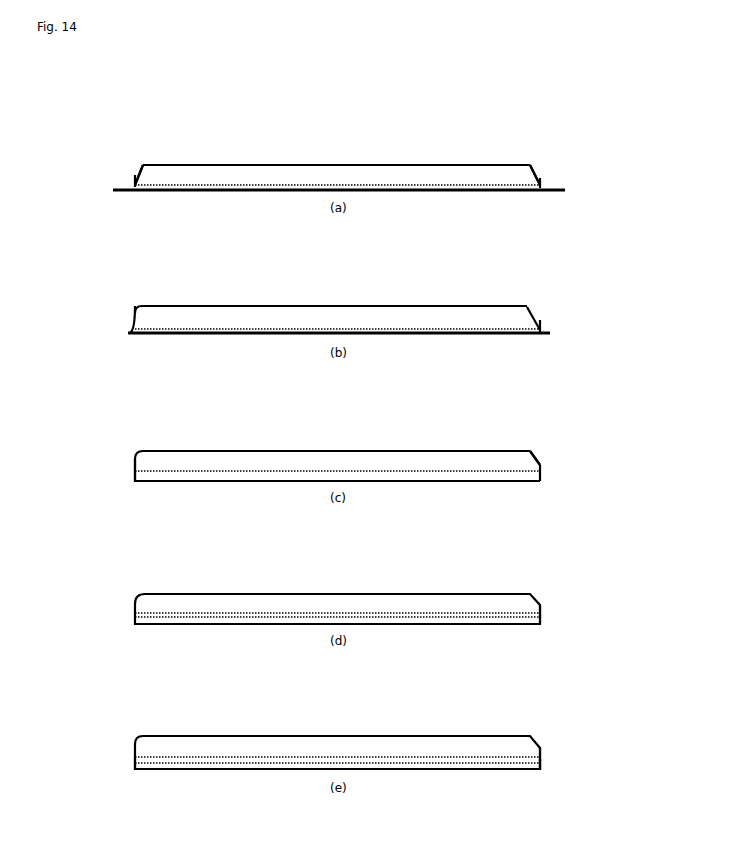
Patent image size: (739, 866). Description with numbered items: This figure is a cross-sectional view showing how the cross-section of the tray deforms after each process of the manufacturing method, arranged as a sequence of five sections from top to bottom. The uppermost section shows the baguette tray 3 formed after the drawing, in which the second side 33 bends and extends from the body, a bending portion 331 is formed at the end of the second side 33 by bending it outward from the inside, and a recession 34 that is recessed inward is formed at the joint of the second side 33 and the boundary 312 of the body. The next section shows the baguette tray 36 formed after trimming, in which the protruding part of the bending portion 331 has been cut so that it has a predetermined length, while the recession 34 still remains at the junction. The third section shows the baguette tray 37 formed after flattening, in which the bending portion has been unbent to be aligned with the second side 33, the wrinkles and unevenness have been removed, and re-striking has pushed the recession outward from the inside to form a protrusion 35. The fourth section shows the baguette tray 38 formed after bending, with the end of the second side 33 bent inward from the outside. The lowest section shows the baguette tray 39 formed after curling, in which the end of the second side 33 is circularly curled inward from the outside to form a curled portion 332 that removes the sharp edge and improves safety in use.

The baguette tray 3 is at (313, 143).
The boundary of the body 312 is at (200, 164).
The second side 33 is at (135, 184).
The bending portion 331 is at (118, 196).
The curled portion 332 is at (135, 768).
The recession 34 is at (140, 165).
The protrusion 35 is at (533, 452).
The baguette tray 36 is at (237, 290).
The baguette tray 37 is at (232, 420).
The baguette tray 38 is at (237, 572).
The baguette tray 39 is at (232, 718).